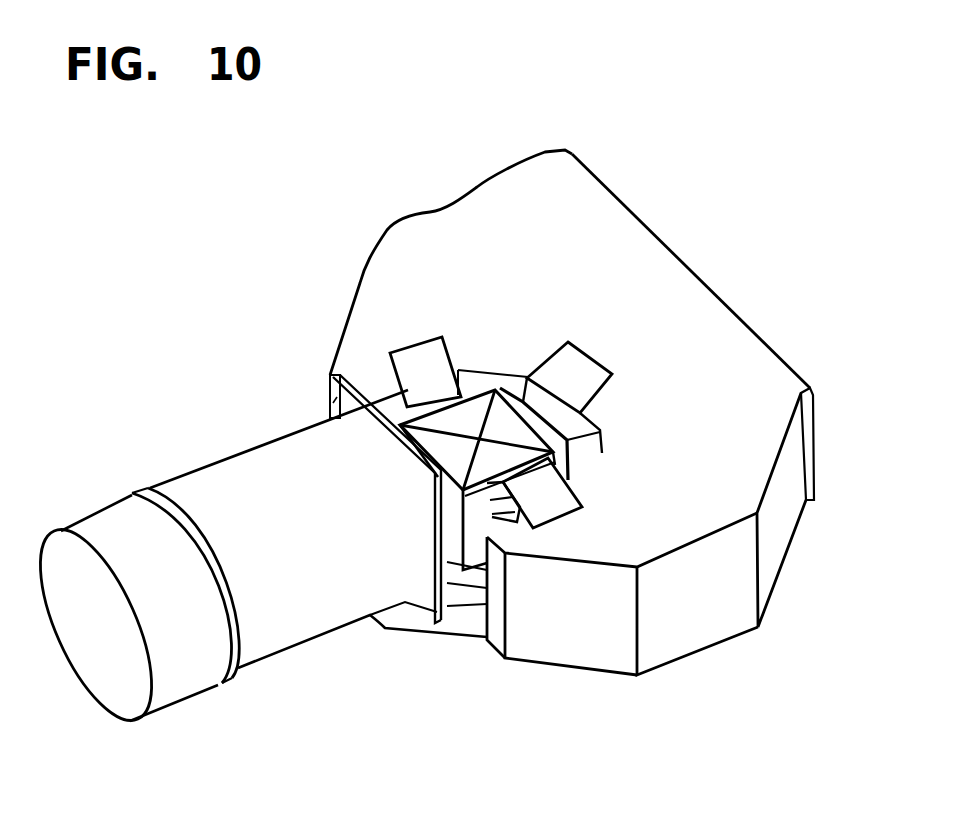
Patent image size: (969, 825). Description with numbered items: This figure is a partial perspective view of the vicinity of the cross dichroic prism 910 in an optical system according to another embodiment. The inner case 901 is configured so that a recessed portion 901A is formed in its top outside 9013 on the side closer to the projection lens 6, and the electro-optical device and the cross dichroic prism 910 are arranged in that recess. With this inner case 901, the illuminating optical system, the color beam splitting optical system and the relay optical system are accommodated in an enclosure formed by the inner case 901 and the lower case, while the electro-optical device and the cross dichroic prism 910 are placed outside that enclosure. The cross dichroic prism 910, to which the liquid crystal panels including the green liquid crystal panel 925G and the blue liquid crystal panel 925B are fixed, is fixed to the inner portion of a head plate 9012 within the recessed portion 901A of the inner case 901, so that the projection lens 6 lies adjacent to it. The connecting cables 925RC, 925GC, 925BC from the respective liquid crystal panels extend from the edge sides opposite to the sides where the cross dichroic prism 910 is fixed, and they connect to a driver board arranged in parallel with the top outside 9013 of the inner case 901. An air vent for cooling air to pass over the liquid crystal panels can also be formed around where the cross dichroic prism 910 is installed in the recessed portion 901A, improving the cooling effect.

The projection lens 6 is at (215, 469).
The head plate 9012 is at (330, 393).
The top outside 9013 is at (580, 212).
The inner case 901 is at (653, 240).
The recessed portion 901A is at (603, 465).
The cross dichroic prism 910 is at (470, 405).
The connecting cable 925RC is at (420, 343).
The connecting cable 925GC is at (650, 337).
The liquid crystal panel 925G is at (572, 458).
The connecting cable 925BC is at (555, 519).
The liquid crystal panel 925B is at (520, 537).